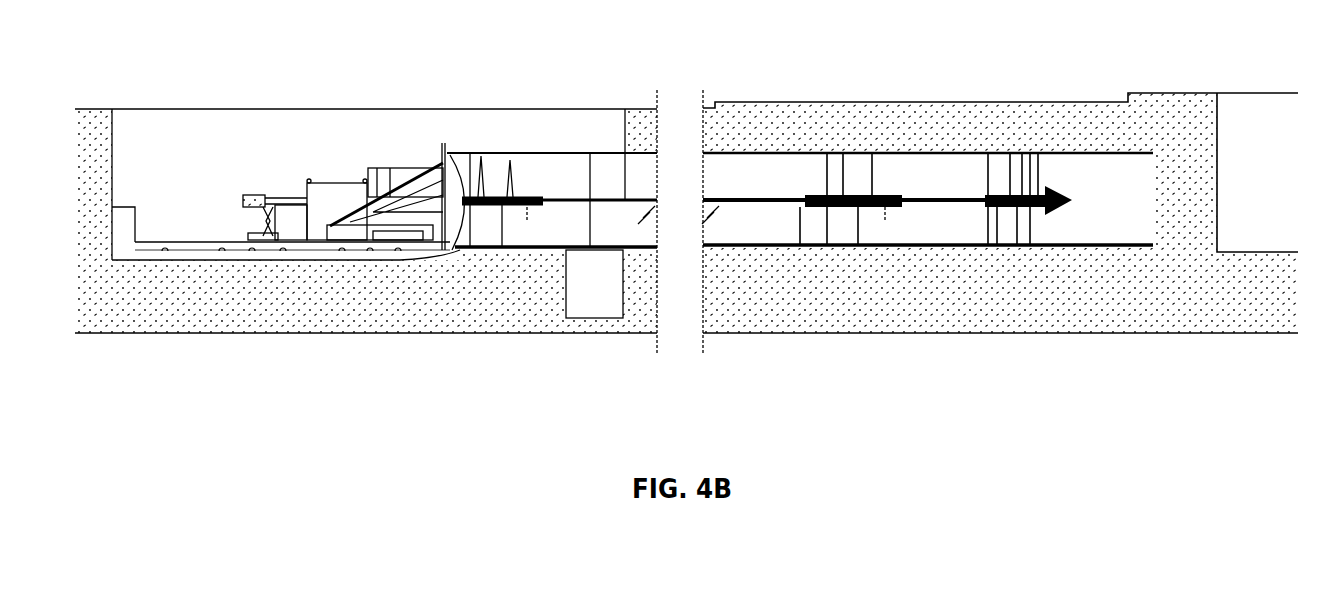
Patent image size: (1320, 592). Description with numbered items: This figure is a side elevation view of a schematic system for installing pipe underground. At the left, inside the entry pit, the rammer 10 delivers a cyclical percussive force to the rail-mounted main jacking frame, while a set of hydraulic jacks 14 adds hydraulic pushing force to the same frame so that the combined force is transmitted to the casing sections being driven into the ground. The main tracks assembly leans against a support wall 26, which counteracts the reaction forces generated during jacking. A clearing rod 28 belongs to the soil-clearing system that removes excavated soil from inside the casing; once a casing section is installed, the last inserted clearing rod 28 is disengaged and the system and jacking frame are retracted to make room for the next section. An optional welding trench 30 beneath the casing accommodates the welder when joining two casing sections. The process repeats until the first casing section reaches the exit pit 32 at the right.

The rammer 10 is at (388, 162).
The hydraulic jacks 14 is at (403, 238).
The support wall 26 is at (125, 233).
The clearing rod 28 is at (287, 200).
The welding trench 30 is at (597, 272).
The exit pit 32 is at (1282, 168).